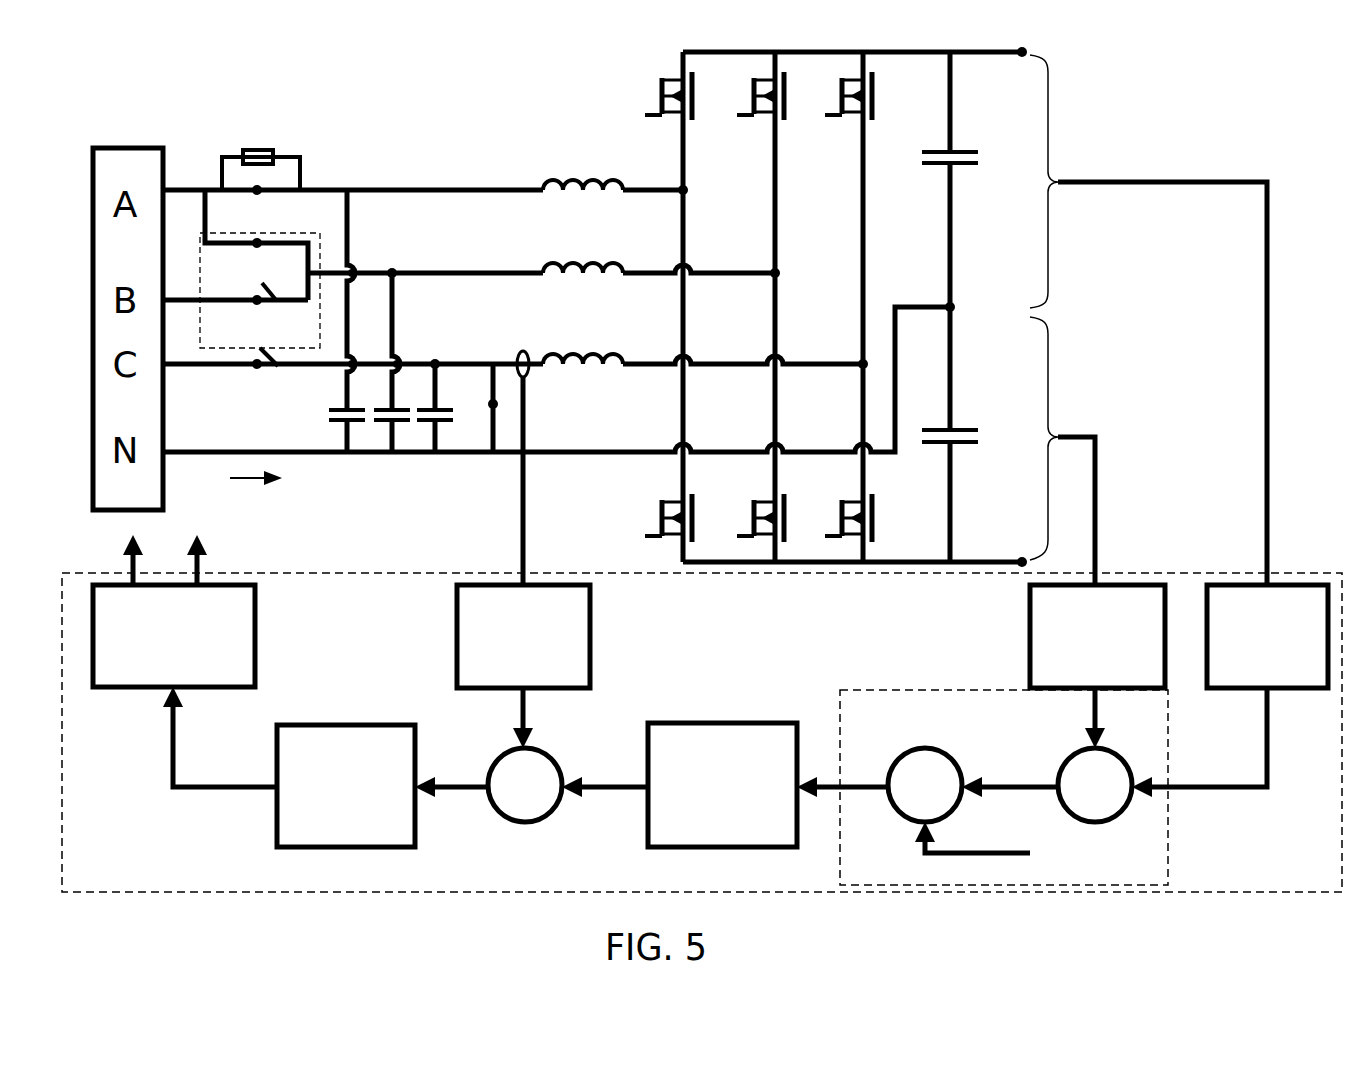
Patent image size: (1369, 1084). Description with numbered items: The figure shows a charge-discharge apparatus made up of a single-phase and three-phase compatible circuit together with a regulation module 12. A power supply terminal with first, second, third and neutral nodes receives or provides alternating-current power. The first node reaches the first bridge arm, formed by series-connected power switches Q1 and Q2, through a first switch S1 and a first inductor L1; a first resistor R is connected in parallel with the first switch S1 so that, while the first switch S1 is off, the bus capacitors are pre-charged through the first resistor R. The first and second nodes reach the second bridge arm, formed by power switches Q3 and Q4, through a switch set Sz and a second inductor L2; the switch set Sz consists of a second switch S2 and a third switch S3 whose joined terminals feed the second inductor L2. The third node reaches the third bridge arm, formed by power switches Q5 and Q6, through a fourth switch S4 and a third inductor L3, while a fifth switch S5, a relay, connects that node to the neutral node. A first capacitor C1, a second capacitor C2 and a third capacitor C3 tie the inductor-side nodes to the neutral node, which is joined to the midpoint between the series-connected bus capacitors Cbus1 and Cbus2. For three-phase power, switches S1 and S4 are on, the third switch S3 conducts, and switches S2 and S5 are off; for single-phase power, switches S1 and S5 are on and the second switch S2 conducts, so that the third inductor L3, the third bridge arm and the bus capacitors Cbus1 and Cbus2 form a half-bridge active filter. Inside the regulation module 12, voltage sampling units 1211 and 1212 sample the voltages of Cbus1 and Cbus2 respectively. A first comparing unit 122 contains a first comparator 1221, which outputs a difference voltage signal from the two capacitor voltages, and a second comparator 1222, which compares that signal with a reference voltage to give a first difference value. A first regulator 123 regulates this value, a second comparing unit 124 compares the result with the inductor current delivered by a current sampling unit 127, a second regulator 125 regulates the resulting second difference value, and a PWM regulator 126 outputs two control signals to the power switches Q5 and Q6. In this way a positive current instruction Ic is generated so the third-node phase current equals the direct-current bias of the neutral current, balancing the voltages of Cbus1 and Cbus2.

The regulation module 12 is at (120, 855).
The first comparing unit 122 is at (856, 690).
The first regulator 123 is at (722, 785).
The second comparing unit 124 is at (518, 807).
The second regulator 125 is at (346, 786).
The PWM regulator 126 is at (162, 611).
The current sampling unit 127 is at (523, 636).
The voltage sampling unit 1211 is at (1267, 636).
The voltage sampling unit 1212 is at (1097, 636).
The first comparator 1221 is at (1094, 807).
The second comparator 1222 is at (916, 764).
The first resistor R is at (261, 149).
The switch set Sz is at (300, 233).
The first switch S1 is at (256, 242).
The second switch S2 is at (249, 269).
The third switch S3 is at (255, 330).
The fourth switch S4 is at (247, 387).
The fifth switch S5 is at (474, 408).
The first capacitor C1 is at (333, 321).
The second capacitor C2 is at (380, 360).
The third capacitor C3 is at (425, 405).
The inductor L1 is at (581, 165).
The inductor L2 is at (583, 251).
The inductor L3 is at (583, 338).
The current instruction Ic is at (532, 327).
The first power switch Q1 is at (689, 95).
The second power switch Q2 is at (690, 518).
The third power switch Q3 is at (782, 96).
The fourth power switch Q4 is at (782, 517).
The fifth power switch Q5 is at (870, 96).
The sixth power switch Q6 is at (872, 518).
The first bus capacitor Cbus1 is at (975, 142).
The second bus capacitor Cbus2 is at (977, 458).